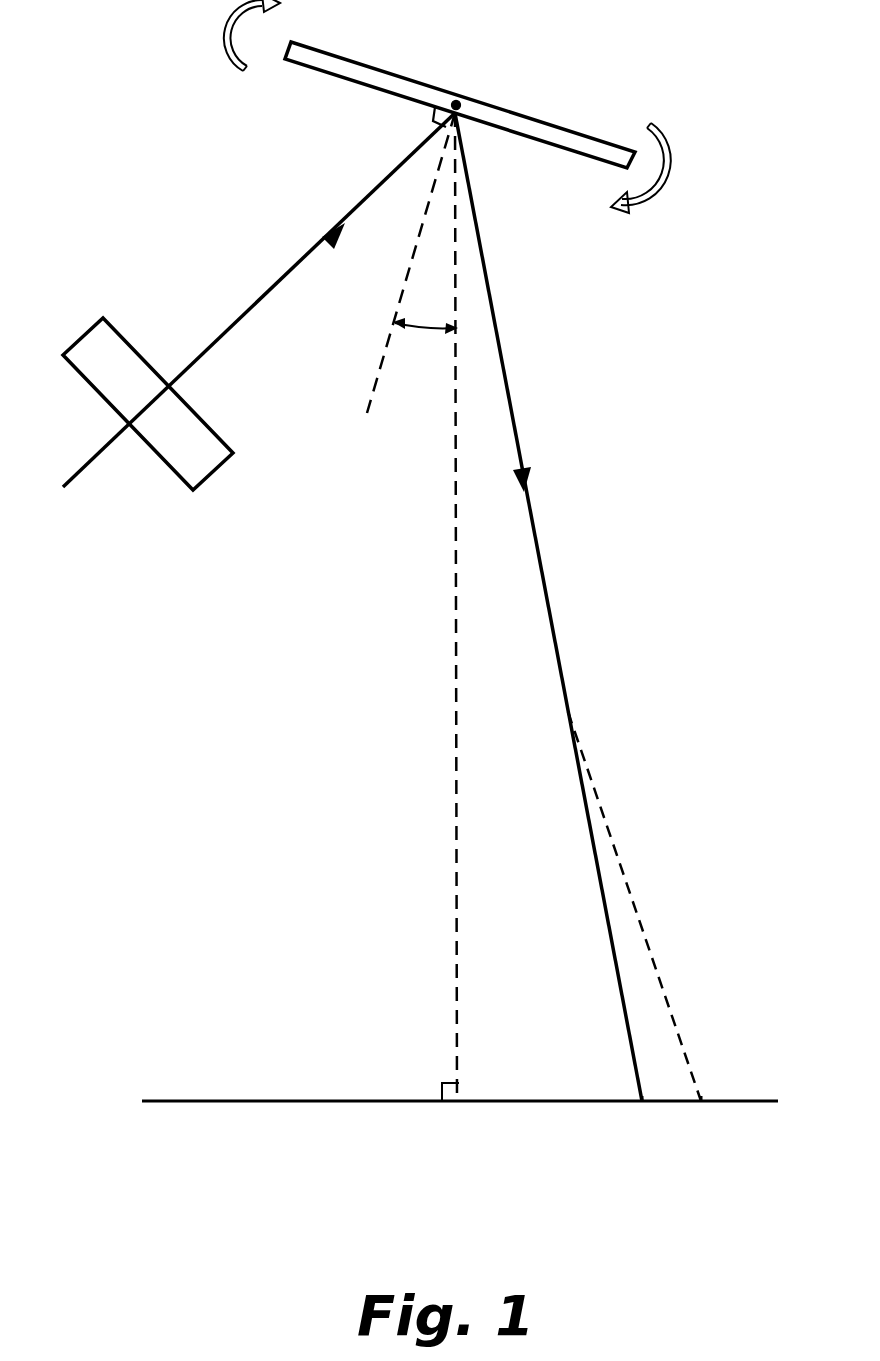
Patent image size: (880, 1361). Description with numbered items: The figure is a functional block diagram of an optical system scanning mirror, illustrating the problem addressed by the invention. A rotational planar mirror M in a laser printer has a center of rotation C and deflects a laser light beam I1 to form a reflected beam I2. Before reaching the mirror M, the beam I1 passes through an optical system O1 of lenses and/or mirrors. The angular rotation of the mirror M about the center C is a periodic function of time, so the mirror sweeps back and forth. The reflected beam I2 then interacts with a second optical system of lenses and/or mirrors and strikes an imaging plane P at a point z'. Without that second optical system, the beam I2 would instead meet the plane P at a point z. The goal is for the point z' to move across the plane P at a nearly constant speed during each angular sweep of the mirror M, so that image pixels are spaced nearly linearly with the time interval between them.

The rotational planar mirror M is at (378, 69).
The center of rotation C is at (465, 98).
The optical system O1 is at (122, 338).
The laser light beam I1 is at (308, 252).
The reflected beam I2 is at (512, 398).
The imaging plane P is at (313, 1100).
The point z is at (645, 1119).
The point of intersection z' is at (705, 1119).